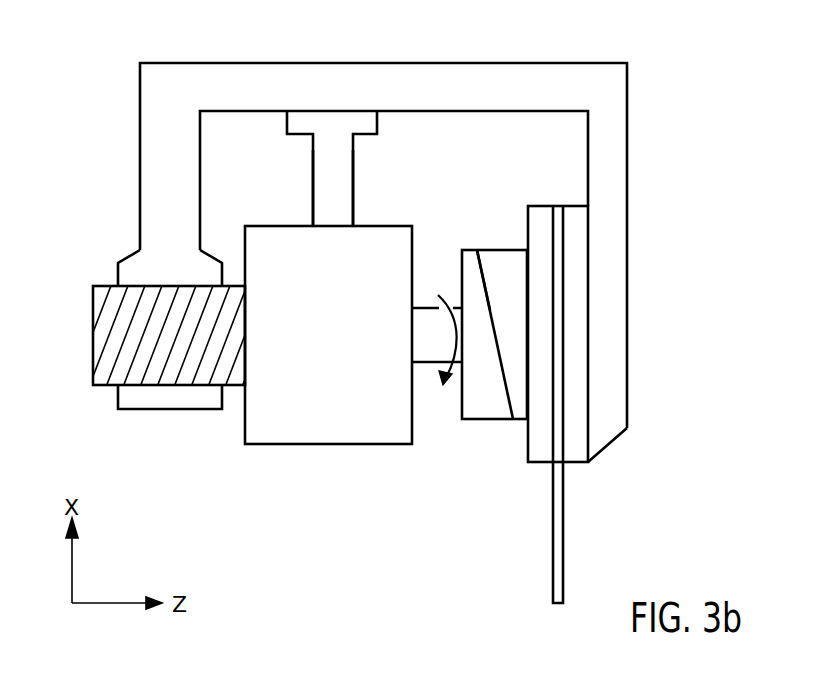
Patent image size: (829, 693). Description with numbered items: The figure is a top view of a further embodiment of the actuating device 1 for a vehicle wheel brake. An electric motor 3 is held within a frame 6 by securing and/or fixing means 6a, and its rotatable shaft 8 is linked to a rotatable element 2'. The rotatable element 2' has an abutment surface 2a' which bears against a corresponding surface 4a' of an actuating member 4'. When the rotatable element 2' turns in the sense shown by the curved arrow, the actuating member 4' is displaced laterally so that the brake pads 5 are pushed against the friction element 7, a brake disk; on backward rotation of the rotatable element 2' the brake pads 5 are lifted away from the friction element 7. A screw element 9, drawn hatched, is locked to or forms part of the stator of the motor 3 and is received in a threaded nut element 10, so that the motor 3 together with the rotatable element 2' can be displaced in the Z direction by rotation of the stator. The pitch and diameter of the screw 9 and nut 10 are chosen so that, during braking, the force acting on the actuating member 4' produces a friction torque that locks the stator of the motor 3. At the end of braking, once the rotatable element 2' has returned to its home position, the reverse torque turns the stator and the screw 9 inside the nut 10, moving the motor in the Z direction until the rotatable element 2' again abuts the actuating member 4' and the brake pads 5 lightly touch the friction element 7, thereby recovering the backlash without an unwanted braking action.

The actuating device 1 is at (112, 62).
The frame 6 is at (319, 75).
The securing and/or fixing means 6a is at (322, 189).
The threaded nut element 10 is at (140, 250).
The screw element 9 is at (93, 345).
The electric motor 3 is at (290, 437).
The rotatable shaft 8 is at (430, 353).
The rotatable element 2' is at (491, 376).
The abutment surface 2a' is at (501, 376).
The surface of the actuating member 4a' is at (502, 243).
The actuating member 4' is at (595, 334).
The brake pads 5 is at (537, 383).
The friction element 7 is at (565, 580).